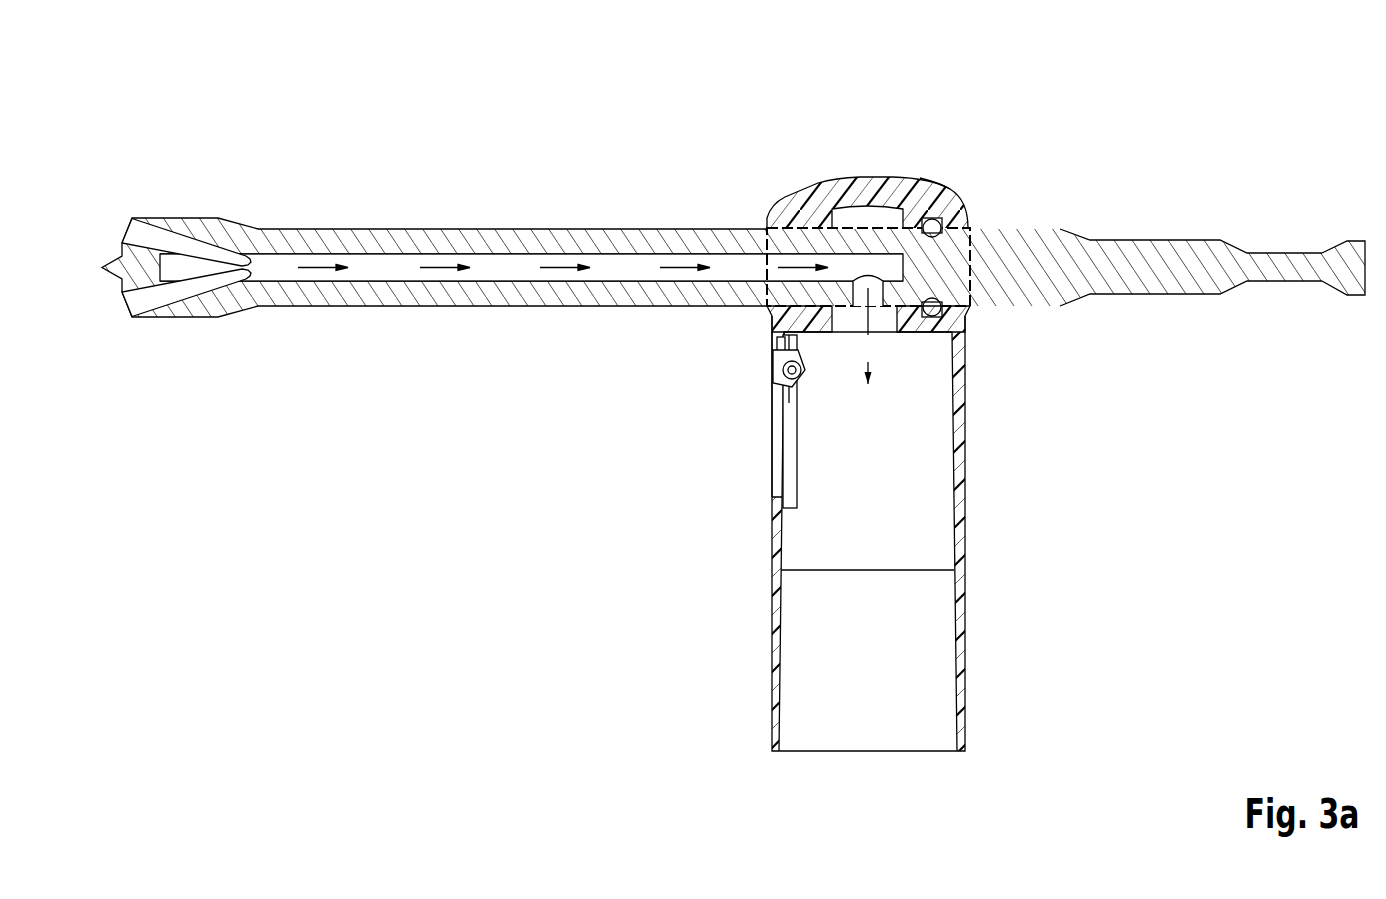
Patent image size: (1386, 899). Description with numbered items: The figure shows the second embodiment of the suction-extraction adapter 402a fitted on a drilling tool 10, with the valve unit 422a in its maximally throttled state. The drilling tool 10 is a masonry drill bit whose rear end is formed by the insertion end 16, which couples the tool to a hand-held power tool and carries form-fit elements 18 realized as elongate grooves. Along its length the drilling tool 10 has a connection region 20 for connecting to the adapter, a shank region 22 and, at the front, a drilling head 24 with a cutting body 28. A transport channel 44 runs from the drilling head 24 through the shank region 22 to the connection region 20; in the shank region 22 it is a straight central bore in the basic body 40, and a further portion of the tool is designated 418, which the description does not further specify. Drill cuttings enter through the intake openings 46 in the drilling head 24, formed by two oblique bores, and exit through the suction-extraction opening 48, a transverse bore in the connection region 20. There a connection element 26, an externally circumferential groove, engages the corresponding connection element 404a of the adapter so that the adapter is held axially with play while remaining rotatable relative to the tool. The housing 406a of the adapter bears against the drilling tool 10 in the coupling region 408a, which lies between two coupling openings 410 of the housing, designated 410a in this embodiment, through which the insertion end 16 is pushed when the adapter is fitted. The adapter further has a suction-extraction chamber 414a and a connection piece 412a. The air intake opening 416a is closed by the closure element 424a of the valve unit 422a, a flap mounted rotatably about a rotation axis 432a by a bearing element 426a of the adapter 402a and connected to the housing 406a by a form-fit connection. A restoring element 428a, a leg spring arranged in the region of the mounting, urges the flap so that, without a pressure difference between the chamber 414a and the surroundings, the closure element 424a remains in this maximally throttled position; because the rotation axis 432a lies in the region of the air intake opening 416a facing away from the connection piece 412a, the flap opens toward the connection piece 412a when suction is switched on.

The drilling tool 10 is at (653, 108).
The insertion end 16 is at (1220, 213).
The form-fit elements 18 is at (1282, 250).
The connection region 20 is at (870, 130).
The shank region 22 is at (498, 213).
The drilling head 24 is at (180, 170).
The connection element 26 is at (950, 222).
The cutting body 28 is at (115, 265).
The basic body 40 is at (563, 240).
The transport channel 44 is at (615, 268).
The intake openings 46 is at (137, 230).
The suction-extraction opening 48 is at (877, 309).
The suction-extraction adapter 402a is at (935, 165).
The connection element 404a is at (942, 220).
The housing 406a is at (840, 190).
The coupling region 408a is at (755, 267).
The coupling openings 410 is at (978, 222).
The coupling opening 410a is at (762, 312).
The connection piece 412a is at (993, 420).
The suction-extraction chamber 414a is at (837, 533).
The air intake opening 416a is at (778, 480).
The lower tube wall 418 is at (560, 300).
The valve unit 422a is at (806, 421).
The closure element 424a is at (797, 483).
The bearing element 426a is at (783, 384).
The restoring element 428a is at (795, 351).
The rotation axis 432a is at (786, 374).